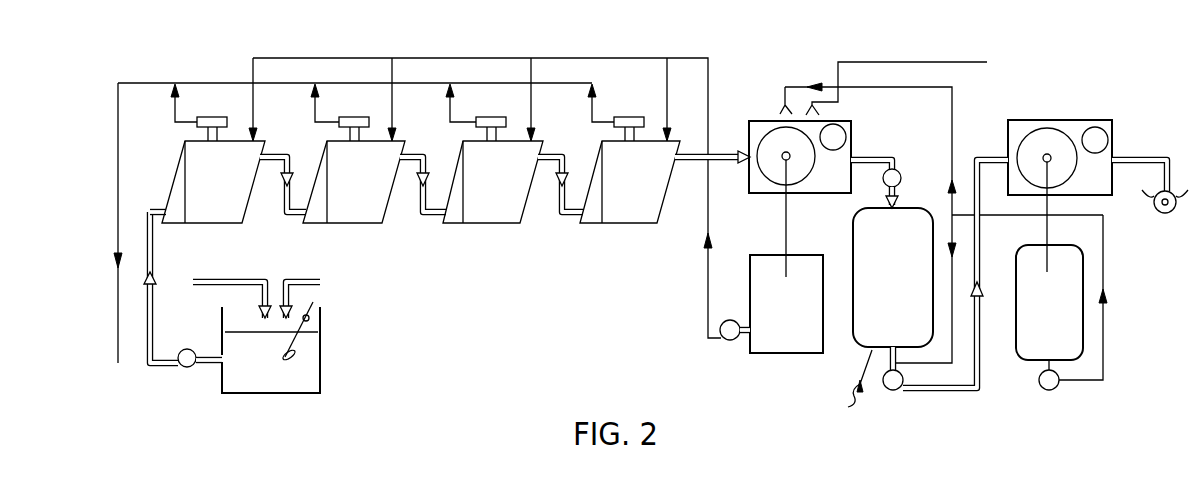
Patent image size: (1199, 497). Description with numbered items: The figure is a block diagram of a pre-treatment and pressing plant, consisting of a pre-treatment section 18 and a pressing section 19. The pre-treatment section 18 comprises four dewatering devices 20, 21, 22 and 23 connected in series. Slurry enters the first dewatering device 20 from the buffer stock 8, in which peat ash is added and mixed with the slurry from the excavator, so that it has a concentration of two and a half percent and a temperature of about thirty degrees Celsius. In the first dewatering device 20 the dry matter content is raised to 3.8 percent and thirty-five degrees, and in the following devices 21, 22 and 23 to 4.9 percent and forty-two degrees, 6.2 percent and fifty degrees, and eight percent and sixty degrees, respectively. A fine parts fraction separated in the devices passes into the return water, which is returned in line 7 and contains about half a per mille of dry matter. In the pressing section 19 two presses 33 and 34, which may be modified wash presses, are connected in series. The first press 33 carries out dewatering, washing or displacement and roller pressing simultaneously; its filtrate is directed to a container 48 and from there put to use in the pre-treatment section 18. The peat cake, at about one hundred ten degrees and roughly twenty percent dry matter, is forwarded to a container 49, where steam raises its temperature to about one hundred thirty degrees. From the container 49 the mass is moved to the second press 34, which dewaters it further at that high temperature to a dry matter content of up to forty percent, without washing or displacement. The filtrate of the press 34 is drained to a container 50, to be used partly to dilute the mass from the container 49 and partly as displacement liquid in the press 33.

The line 7 is at (118, 193).
The buffer stock 8 is at (320, 347).
The pre-treatment section 18 is at (480, 40).
The pressing section 19 is at (910, 28).
The first dewatering device 20 is at (218, 193).
The dewatering device 21 is at (357, 193).
The dewatering device 22 is at (500, 194).
The dewatering device 23 is at (638, 194).
The press 33 is at (763, 120).
The press 34 is at (1032, 120).
The container 48 is at (750, 353).
The container 49 is at (853, 340).
The container 50 is at (1018, 358).